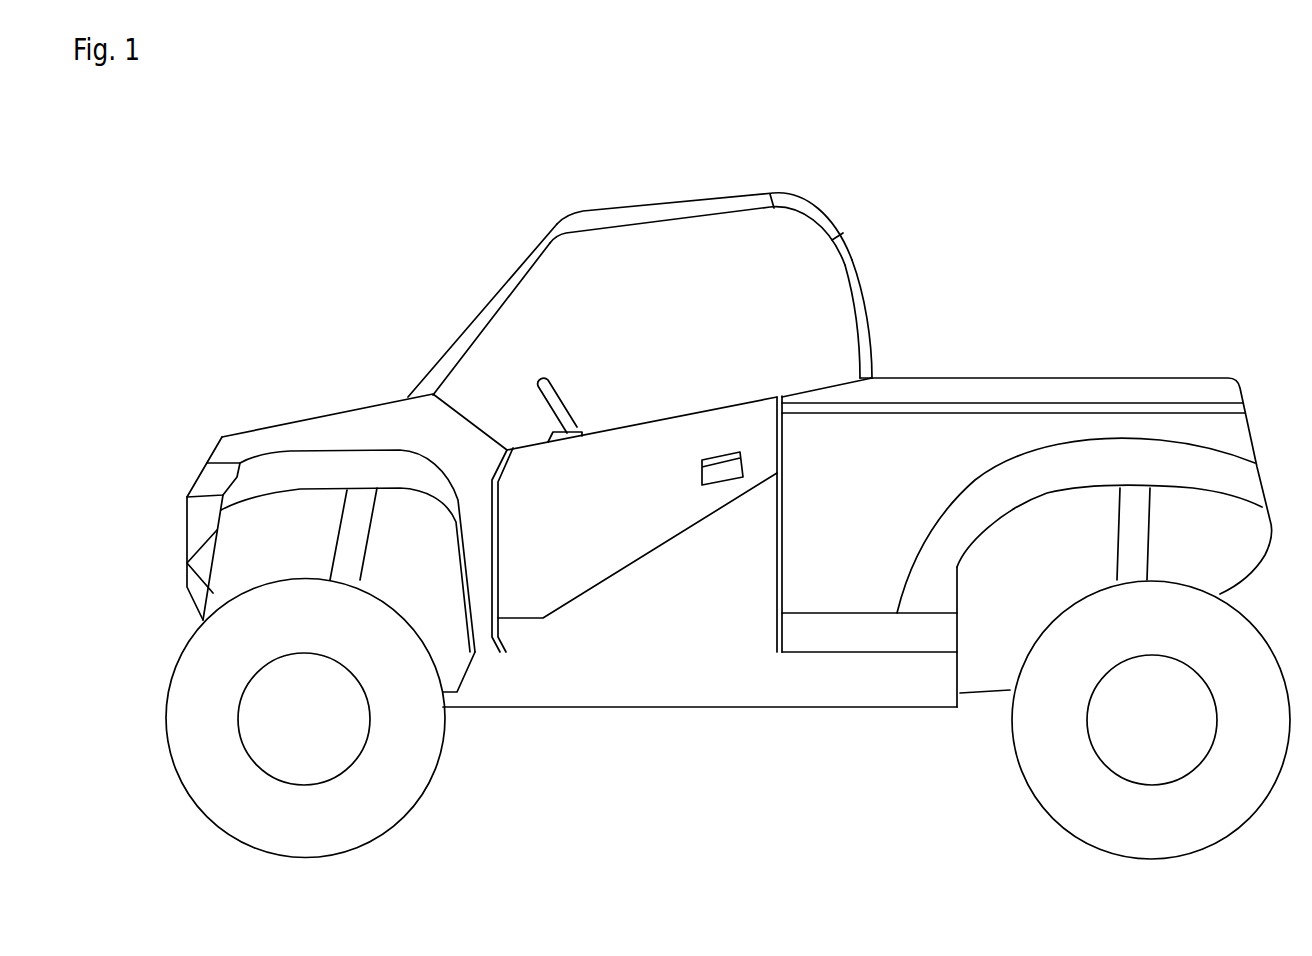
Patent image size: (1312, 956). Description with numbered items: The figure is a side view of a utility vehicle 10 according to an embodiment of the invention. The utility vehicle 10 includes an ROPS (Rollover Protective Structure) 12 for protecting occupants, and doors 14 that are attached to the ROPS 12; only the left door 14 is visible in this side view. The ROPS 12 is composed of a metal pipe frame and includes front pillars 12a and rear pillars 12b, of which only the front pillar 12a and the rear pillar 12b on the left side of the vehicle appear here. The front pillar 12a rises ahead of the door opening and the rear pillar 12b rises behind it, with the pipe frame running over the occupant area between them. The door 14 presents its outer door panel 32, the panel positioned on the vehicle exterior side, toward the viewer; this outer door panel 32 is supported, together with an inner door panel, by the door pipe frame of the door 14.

The utility vehicle 10 is at (1053, 204).
The ROPS (Rollover Protective Structure) 12 is at (675, 204).
The front pillar 12a is at (475, 323).
The rear pillar 12b is at (862, 273).
The door 14 is at (702, 620).
The outer door panel 32 is at (637, 535).